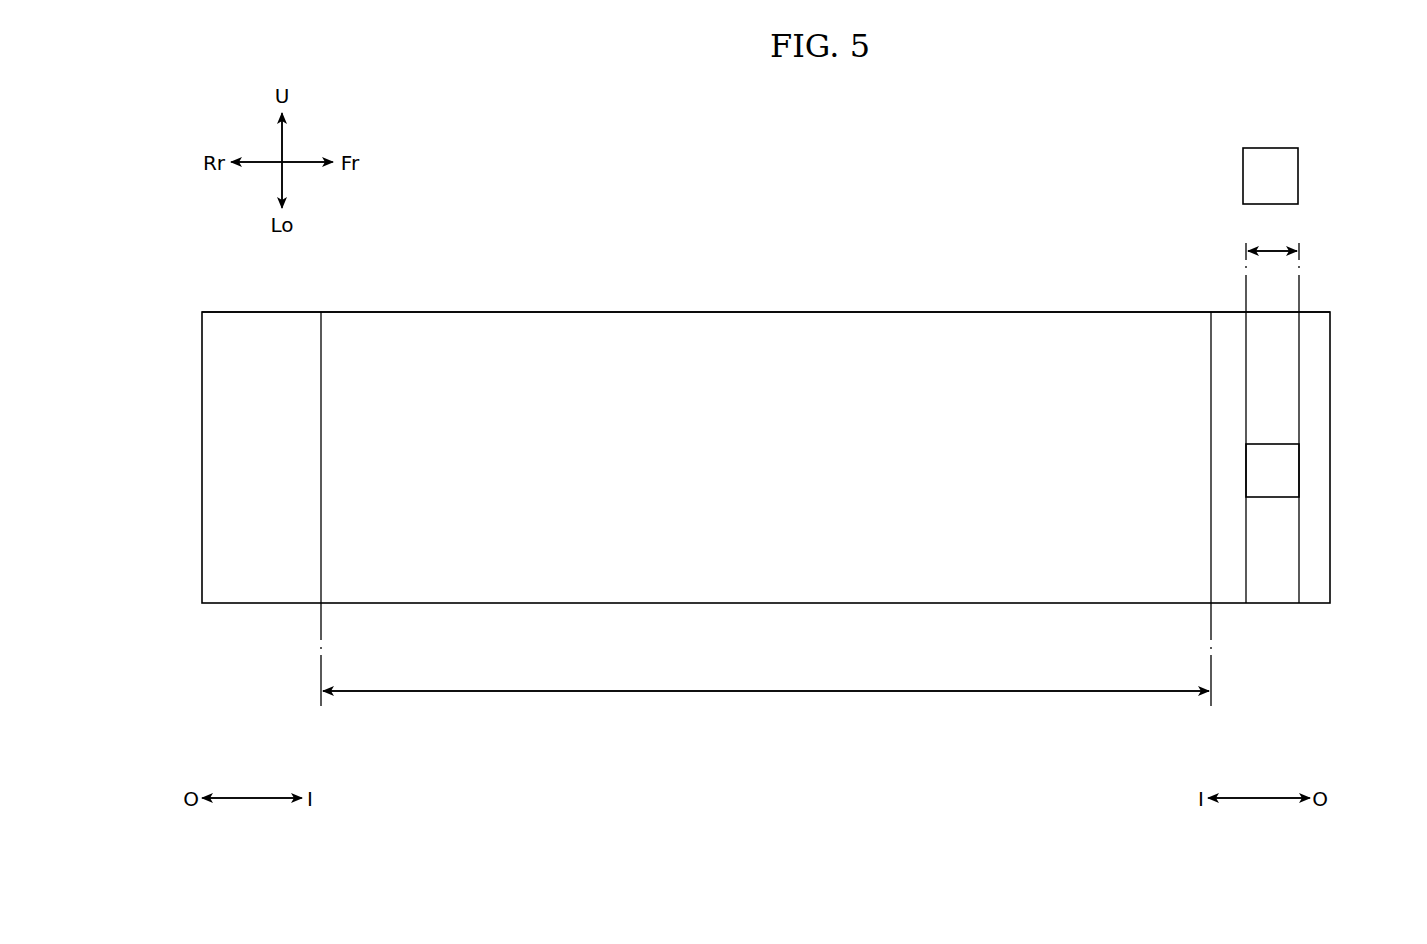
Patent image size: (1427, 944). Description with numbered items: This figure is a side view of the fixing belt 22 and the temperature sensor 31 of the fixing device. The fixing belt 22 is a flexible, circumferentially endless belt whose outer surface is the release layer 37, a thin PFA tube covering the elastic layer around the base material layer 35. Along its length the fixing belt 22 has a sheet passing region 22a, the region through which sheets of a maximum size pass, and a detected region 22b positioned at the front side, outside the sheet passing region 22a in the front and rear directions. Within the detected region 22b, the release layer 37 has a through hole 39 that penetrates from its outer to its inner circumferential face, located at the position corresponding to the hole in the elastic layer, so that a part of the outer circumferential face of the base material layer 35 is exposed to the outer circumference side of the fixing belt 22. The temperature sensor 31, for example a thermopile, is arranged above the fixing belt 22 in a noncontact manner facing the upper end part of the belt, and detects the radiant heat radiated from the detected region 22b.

The fixing belt 22 is at (850, 288).
The sheet passing region 22a is at (766, 654).
The detected region 22b is at (1272, 412).
The temperature sensor 31 is at (1305, 143).
The base material layer 35 is at (1284, 486).
The release layer 37 is at (1064, 338).
The through hole 39 is at (1294, 458).